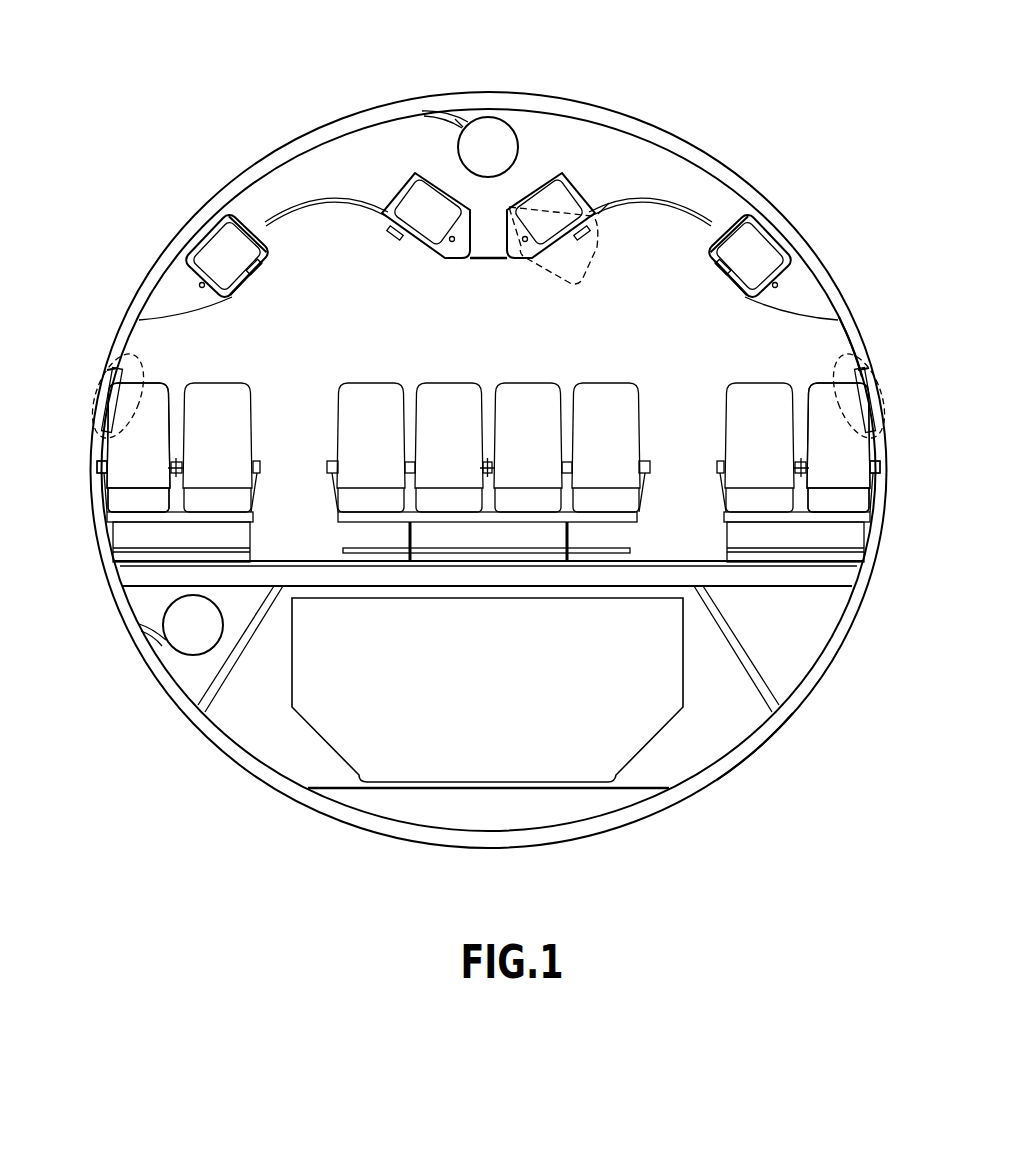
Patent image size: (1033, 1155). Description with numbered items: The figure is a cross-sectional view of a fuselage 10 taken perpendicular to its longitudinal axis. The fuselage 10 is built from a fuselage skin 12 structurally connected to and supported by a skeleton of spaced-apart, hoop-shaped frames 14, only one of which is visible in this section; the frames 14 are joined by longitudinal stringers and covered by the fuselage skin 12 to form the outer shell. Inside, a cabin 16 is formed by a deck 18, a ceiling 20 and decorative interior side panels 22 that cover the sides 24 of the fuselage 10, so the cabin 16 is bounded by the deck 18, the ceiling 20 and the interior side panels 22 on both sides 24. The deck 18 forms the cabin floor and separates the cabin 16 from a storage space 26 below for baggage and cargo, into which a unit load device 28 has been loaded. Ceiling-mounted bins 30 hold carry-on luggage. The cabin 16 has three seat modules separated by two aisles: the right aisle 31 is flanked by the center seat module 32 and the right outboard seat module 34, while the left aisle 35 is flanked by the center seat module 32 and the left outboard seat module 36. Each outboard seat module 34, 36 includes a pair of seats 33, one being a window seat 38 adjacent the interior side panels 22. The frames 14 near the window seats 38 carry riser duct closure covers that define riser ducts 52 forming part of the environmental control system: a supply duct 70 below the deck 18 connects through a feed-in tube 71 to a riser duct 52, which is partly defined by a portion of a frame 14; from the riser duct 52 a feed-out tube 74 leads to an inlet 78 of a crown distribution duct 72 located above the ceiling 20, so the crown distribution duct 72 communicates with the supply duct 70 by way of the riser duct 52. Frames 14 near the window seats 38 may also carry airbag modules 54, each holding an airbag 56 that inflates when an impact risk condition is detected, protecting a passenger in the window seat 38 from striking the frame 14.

The fuselage 10 is at (780, 754).
The fuselage skin 12 is at (410, 840).
The frame 14 is at (653, 803).
The cabin 16 is at (507, 343).
The deck 18 is at (802, 575).
The ceiling 20 is at (665, 212).
The interior side panel 22 is at (843, 338).
The side of the fuselage 24 is at (853, 356).
The storage space 26 is at (258, 735).
The unit load device 28 is at (667, 723).
The ceiling-mounted bin 30 is at (268, 278).
The right aisle 31 is at (277, 478).
The center seat module 32 is at (596, 364).
The seat 33 is at (165, 387).
The right outboard seat module 34 is at (270, 375).
The left aisle 35 is at (670, 478).
The left outboard seat module 36 is at (738, 365).
The window seat 38 is at (122, 473).
The riser duct 52 is at (185, 230).
The airbag module 54 is at (106, 412).
The airbag 56 is at (118, 358).
The supply duct 70 is at (202, 656).
The feed-in tube 71 is at (158, 637).
The crown distribution duct 72 is at (493, 120).
The feed-out tube 74 is at (448, 118).
The inlet 78 is at (458, 120).